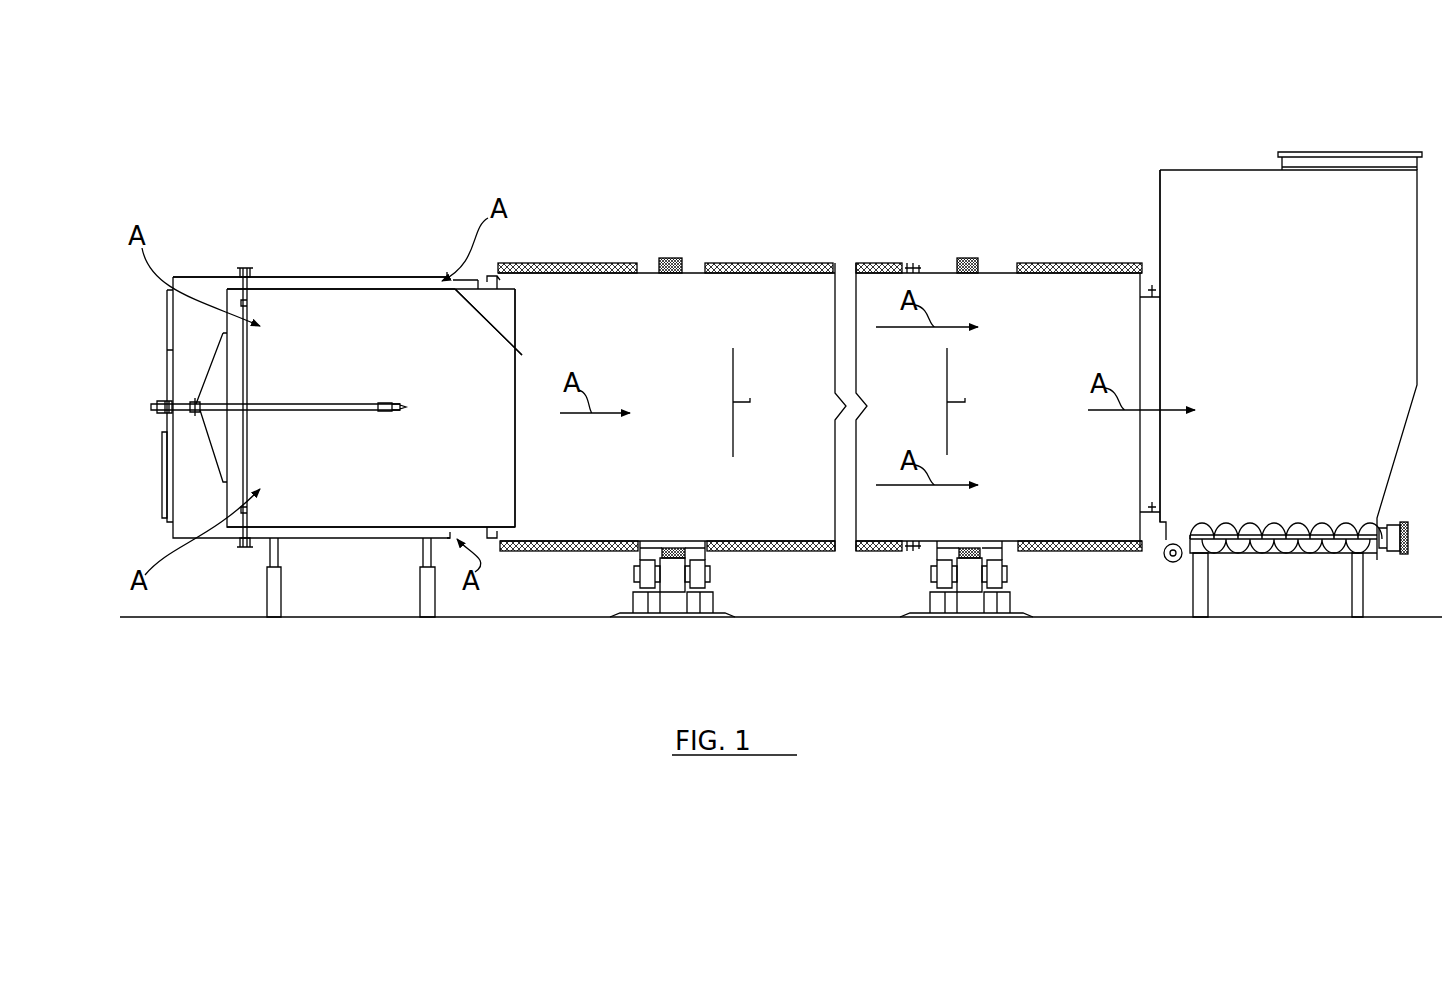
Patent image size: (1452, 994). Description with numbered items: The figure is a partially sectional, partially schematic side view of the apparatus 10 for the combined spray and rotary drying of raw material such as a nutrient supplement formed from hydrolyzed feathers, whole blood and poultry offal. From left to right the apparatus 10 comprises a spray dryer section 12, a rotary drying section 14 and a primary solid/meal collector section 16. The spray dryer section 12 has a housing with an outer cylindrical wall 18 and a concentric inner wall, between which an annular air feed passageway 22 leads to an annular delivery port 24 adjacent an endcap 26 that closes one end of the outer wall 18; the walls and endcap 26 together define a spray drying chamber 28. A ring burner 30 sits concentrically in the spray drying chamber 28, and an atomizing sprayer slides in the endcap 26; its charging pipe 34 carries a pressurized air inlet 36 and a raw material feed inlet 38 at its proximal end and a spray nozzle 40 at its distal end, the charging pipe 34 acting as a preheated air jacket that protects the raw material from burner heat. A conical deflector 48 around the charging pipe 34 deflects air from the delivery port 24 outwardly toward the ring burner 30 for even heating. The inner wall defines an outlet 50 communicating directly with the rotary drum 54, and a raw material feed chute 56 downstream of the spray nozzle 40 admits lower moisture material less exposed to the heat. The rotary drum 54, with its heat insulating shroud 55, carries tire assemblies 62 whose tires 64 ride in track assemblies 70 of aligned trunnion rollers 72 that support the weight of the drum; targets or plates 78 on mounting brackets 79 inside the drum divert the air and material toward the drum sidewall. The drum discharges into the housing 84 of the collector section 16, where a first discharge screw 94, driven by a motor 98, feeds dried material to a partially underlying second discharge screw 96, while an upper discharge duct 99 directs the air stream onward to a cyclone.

The apparatus 10 is at (1122, 101).
The spray dryer section 12 is at (404, 267).
The rotary drying section 14 is at (870, 247).
The primary solid/meal collector section 16 is at (1147, 180).
The outer cylindrical wall 18 is at (333, 276).
The annular air feed passageway 22 is at (262, 276).
The annular delivery port 24 is at (227, 285).
The endcap 26 is at (170, 318).
The spray drying chamber 28 is at (365, 500).
The ring burner 30 is at (248, 508).
The charging pipe 34 is at (318, 405).
The pressurized air inlet 36 is at (157, 413).
The raw material feed inlet 38 is at (163, 405).
The spray nozzle 40 is at (403, 412).
The conical deflector 48 is at (210, 460).
The outlet 50 is at (512, 452).
The rotary drum 54 is at (783, 275).
The heat insulating shroud 55 is at (770, 268).
The raw material feed chute 56 is at (510, 345).
The tire assembly 62 is at (654, 533).
The tire 64 is at (672, 262).
The track assembly 70 is at (726, 580).
The trunnion rollers 72 is at (672, 585).
The targets or plates 78 is at (730, 430).
The mounting brackets 79 is at (752, 402).
The housing 84 is at (1161, 236).
The first discharge screw 94 is at (1233, 520).
The second discharge screw 96 is at (1173, 562).
The motor 98 is at (1403, 524).
The upper discharge duct 99 is at (1336, 152).